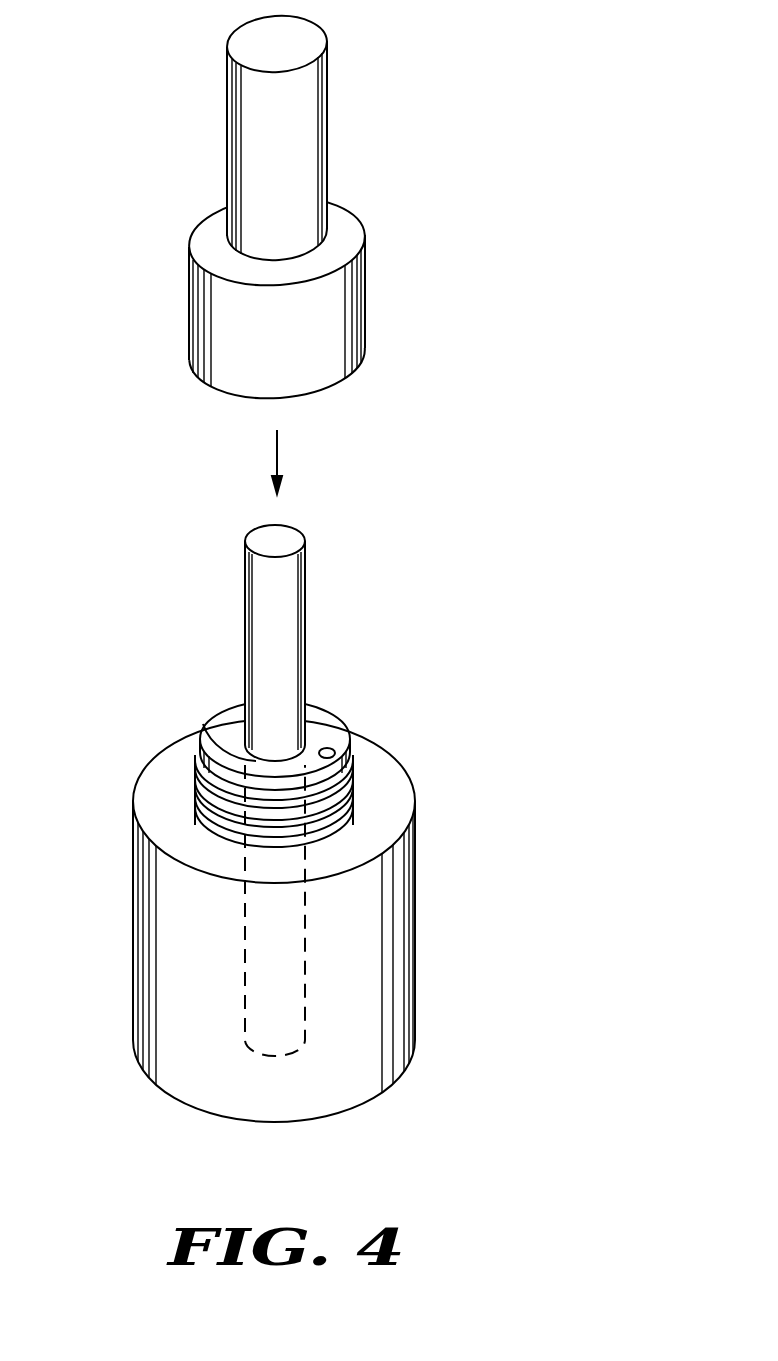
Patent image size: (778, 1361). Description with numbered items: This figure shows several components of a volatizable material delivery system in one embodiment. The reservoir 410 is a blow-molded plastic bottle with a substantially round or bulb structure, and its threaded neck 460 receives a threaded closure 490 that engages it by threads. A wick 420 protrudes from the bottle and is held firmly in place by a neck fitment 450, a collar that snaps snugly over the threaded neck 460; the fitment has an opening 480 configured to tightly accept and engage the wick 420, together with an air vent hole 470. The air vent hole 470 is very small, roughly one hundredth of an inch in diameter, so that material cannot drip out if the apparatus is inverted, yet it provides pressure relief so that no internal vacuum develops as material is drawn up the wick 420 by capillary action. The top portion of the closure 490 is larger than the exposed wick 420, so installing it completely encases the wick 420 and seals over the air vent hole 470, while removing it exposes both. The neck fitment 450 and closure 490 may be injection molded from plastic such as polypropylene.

The reservoir 410 is at (133, 930).
The wick 420 is at (308, 613).
The neck fitment 450 is at (230, 717).
The threaded neck 460 is at (367, 777).
The air vent hole 470 is at (329, 748).
The opening 480 is at (203, 724).
The threaded closure 490 is at (365, 287).